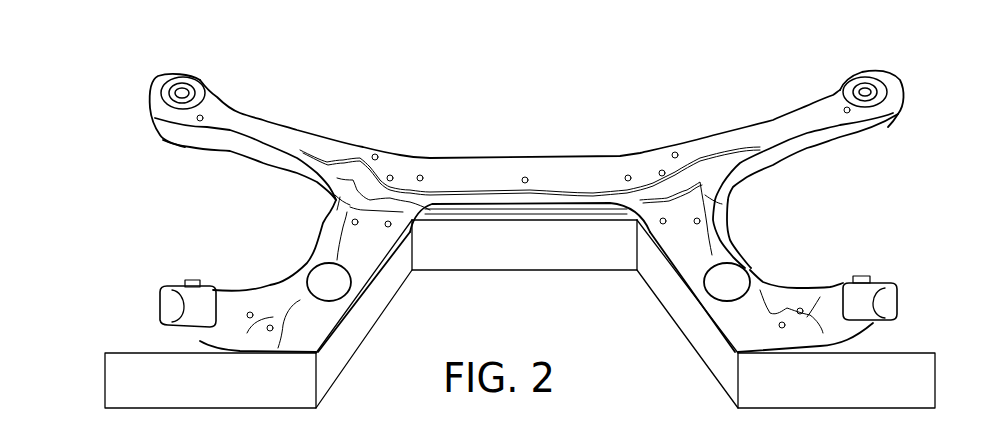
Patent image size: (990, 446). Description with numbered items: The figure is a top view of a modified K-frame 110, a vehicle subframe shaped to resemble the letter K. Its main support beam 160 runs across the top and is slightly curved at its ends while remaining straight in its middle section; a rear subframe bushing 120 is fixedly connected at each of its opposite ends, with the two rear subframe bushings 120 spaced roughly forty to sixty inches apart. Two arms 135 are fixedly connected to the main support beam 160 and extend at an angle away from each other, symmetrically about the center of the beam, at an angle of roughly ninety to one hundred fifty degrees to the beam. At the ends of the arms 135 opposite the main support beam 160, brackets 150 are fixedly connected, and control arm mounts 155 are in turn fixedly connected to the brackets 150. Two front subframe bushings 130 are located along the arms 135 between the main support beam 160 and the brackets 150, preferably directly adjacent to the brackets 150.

The modified K-frame 110 is at (604, 100).
The rear subframe bushing 120 is at (160, 89).
The front subframe bushing 130 is at (318, 276).
The arm 135 is at (357, 205).
The bracket 150 is at (222, 325).
The control arm mount 155 is at (160, 303).
The main support beam 160 is at (503, 169).